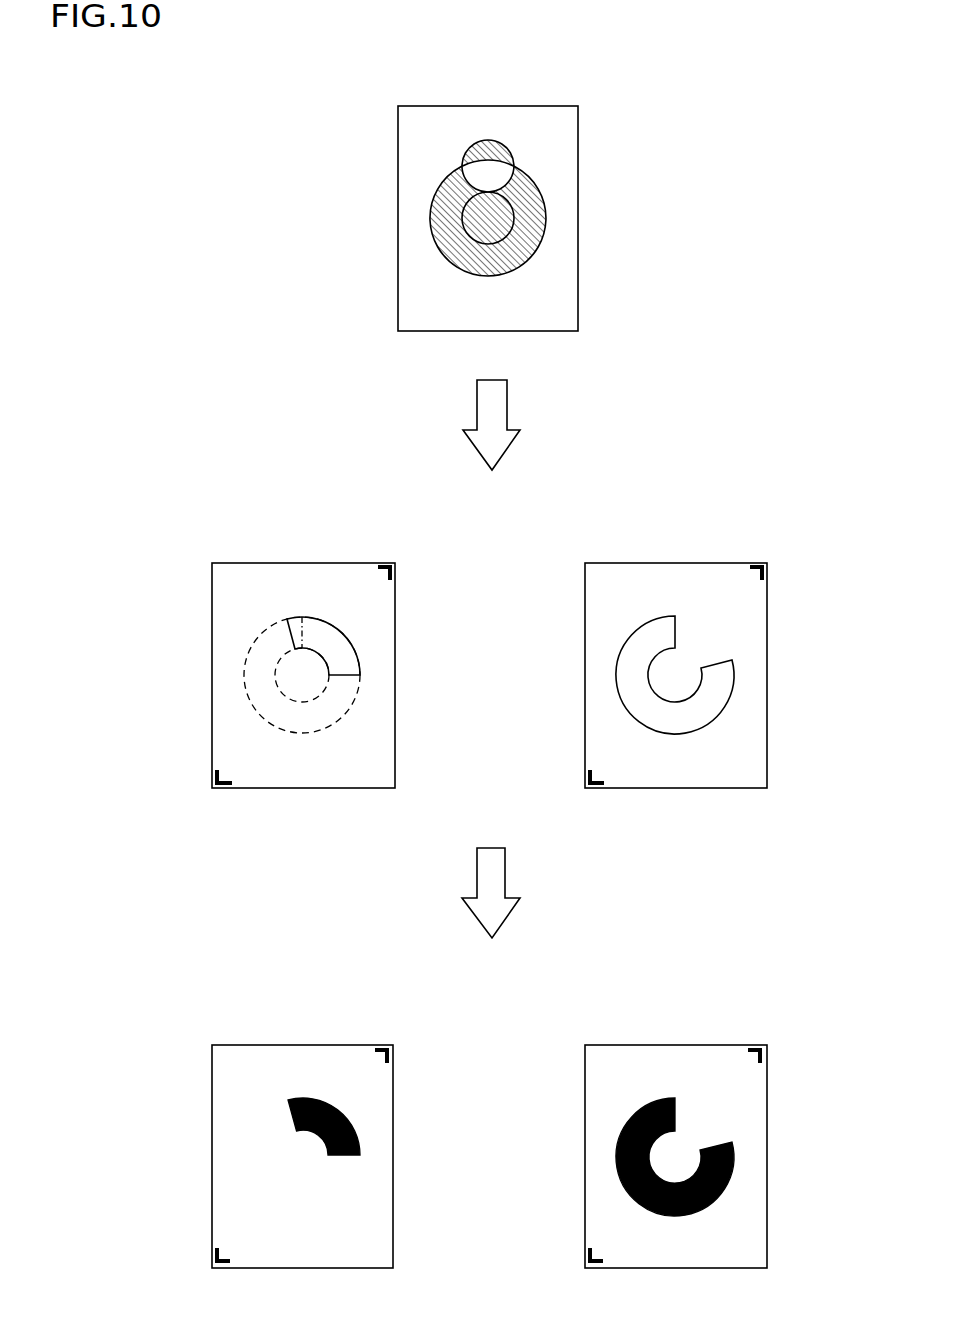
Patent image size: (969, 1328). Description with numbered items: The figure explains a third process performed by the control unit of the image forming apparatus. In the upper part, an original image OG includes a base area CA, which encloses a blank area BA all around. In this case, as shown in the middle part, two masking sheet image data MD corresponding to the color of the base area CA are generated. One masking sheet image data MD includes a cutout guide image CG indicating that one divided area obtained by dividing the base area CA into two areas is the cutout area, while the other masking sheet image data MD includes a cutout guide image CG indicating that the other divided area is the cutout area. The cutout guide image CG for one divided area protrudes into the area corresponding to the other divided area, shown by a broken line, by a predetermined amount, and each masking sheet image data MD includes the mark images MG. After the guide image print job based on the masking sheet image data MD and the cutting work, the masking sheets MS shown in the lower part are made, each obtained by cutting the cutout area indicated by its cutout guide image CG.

The original image OG is at (425, 149).
The base area CA is at (430, 217).
The blank area BA is at (513, 235).
The masking sheet image data MD is at (242, 562).
The mark images MG is at (383, 566).
The cutout guide image CG is at (362, 662).
The masking sheet MS is at (240, 1042).